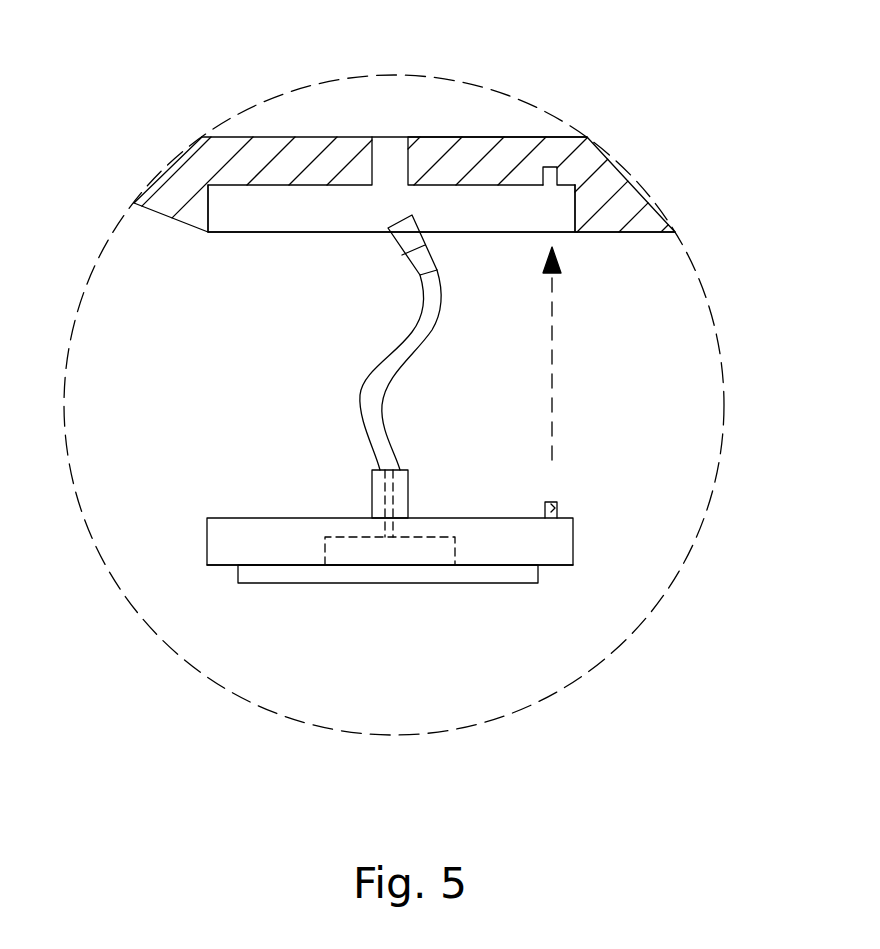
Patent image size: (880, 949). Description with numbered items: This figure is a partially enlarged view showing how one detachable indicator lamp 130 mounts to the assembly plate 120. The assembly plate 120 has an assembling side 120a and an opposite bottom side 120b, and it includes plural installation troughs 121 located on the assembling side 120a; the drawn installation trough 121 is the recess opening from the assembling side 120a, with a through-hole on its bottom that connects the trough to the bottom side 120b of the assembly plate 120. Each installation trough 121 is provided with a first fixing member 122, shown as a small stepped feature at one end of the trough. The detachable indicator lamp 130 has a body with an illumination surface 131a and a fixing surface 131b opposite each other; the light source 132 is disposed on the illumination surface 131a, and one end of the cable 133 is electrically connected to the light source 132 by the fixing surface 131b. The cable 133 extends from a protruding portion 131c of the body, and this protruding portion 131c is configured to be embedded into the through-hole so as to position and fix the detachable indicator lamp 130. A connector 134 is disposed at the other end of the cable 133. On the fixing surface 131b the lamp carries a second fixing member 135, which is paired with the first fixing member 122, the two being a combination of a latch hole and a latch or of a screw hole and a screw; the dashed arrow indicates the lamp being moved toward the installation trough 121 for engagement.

The assembly plate 120 is at (642, 195).
The assembling side 120a is at (186, 243).
The bottom side 120b is at (252, 120).
The installation trough 121 is at (263, 215).
The first fixing member 122 is at (563, 180).
The detachable indicator lamp 130 is at (412, 474).
The illumination surface 131a is at (555, 584).
The fixing surface 131b is at (251, 502).
The protruding portion 131c is at (410, 493).
The light source 132 is at (317, 583).
The cable 133 is at (373, 363).
The connector 134 is at (410, 238).
The second fixing member 135 is at (557, 503).